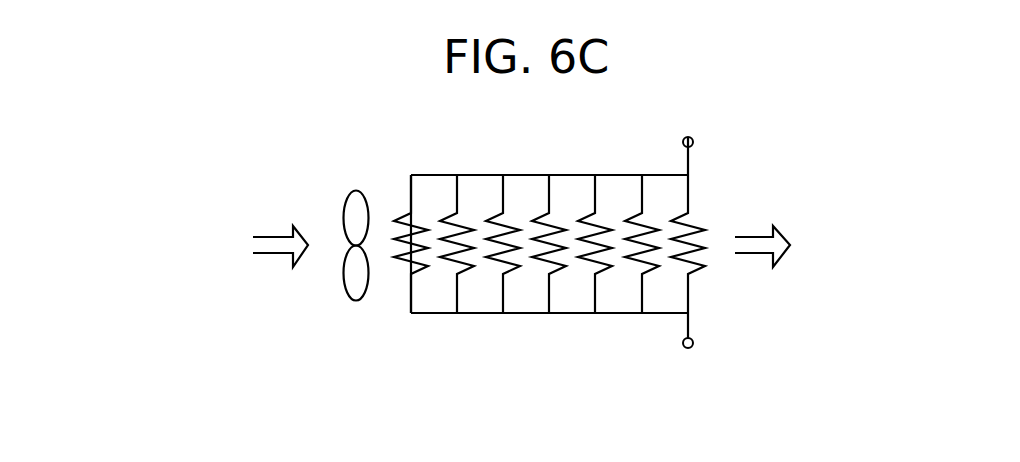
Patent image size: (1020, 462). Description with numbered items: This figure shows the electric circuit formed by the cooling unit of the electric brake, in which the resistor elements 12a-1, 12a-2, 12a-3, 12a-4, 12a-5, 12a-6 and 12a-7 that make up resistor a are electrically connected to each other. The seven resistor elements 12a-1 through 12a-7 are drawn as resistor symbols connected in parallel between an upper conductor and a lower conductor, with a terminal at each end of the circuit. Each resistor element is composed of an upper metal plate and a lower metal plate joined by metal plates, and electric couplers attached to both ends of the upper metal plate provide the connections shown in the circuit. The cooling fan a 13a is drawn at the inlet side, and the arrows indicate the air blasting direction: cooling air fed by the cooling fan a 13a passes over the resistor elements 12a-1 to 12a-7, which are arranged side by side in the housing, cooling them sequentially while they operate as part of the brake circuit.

The cooling fan a 13a is at (355, 190).
The resistor element 12a-1 is at (405, 243).
The resistor element 12a-2 is at (452, 243).
The resistor element 12a-3 is at (498, 243).
The resistor element 12a-4 is at (543, 243).
The resistor element 12a-5 is at (590, 243).
The resistor element 12a-6 is at (636, 243).
The resistor element 12a-7 is at (683, 243).